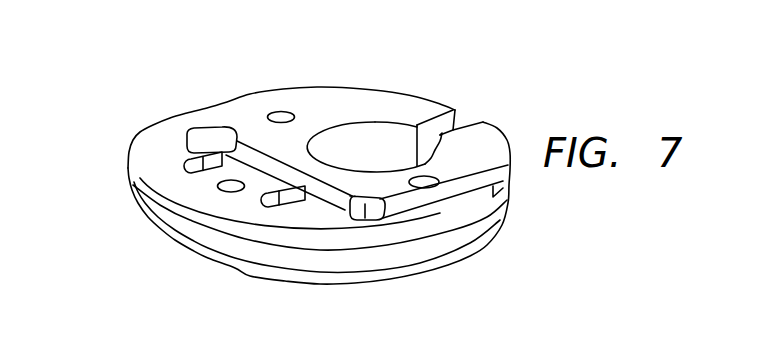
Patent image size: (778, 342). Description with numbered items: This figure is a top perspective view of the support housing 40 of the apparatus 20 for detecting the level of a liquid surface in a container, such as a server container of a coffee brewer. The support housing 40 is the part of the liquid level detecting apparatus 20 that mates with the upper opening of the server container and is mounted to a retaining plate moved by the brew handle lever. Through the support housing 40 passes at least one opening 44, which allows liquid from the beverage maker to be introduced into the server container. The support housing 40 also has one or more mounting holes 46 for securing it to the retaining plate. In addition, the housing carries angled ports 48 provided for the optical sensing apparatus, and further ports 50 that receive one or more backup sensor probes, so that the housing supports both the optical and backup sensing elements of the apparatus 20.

The apparatus for detecting a level of a surface of a liquid 20 is at (310, 167).
The support housing 40 is at (148, 146).
The opening 44 is at (380, 138).
The mounting holes 46 is at (283, 111).
The angled ports 48 is at (192, 132).
The ports 50 is at (185, 165).